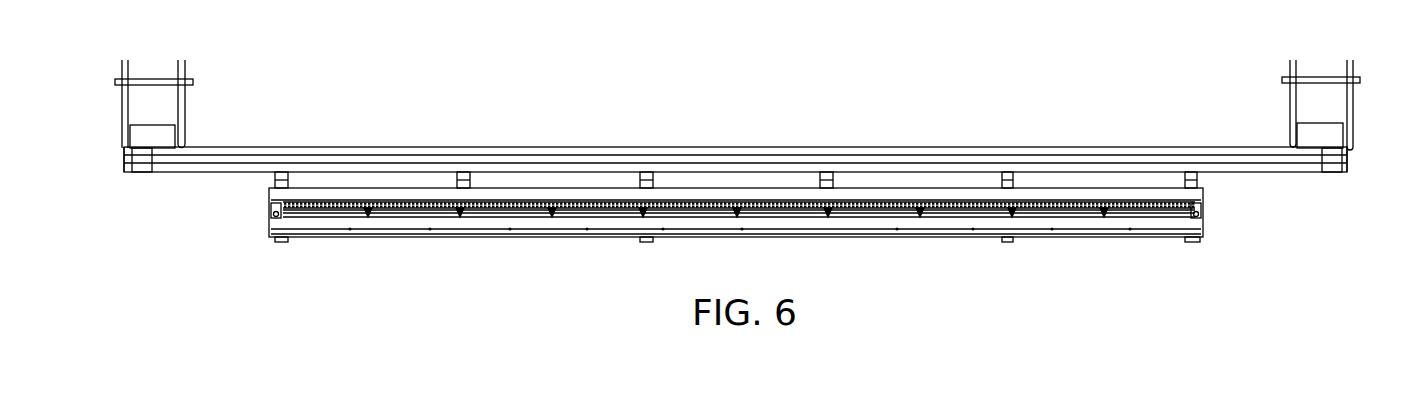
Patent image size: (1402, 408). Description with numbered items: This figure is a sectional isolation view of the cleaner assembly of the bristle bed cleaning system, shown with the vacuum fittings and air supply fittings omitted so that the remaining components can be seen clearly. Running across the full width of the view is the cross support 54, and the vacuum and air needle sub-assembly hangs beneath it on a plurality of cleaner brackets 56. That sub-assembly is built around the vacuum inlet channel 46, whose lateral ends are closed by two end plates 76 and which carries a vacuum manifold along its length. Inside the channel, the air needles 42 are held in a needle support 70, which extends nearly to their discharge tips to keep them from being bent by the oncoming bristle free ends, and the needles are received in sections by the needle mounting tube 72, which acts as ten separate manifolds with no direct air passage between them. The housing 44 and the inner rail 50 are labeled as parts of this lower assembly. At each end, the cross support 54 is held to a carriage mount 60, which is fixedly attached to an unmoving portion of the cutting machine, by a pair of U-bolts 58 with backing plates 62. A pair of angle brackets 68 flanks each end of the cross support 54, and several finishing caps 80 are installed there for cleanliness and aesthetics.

The air needles 42 is at (863, 200).
The housing 44 is at (1021, 223).
The inlet channel 46 is at (762, 235).
The inner rail 50 is at (1093, 228).
The cross support 54 is at (603, 153).
The cleaner brackets 56 is at (457, 173).
The U-bolts 58 is at (186, 109).
The carriage mount 60 is at (140, 124).
The backing plates 62 is at (193, 82).
The angle brackets 68 is at (158, 172).
The needle support 70 is at (603, 213).
The needle mounting tube 72 is at (702, 217).
The end plates 76 is at (268, 216).
The finishing caps 80 is at (128, 146).